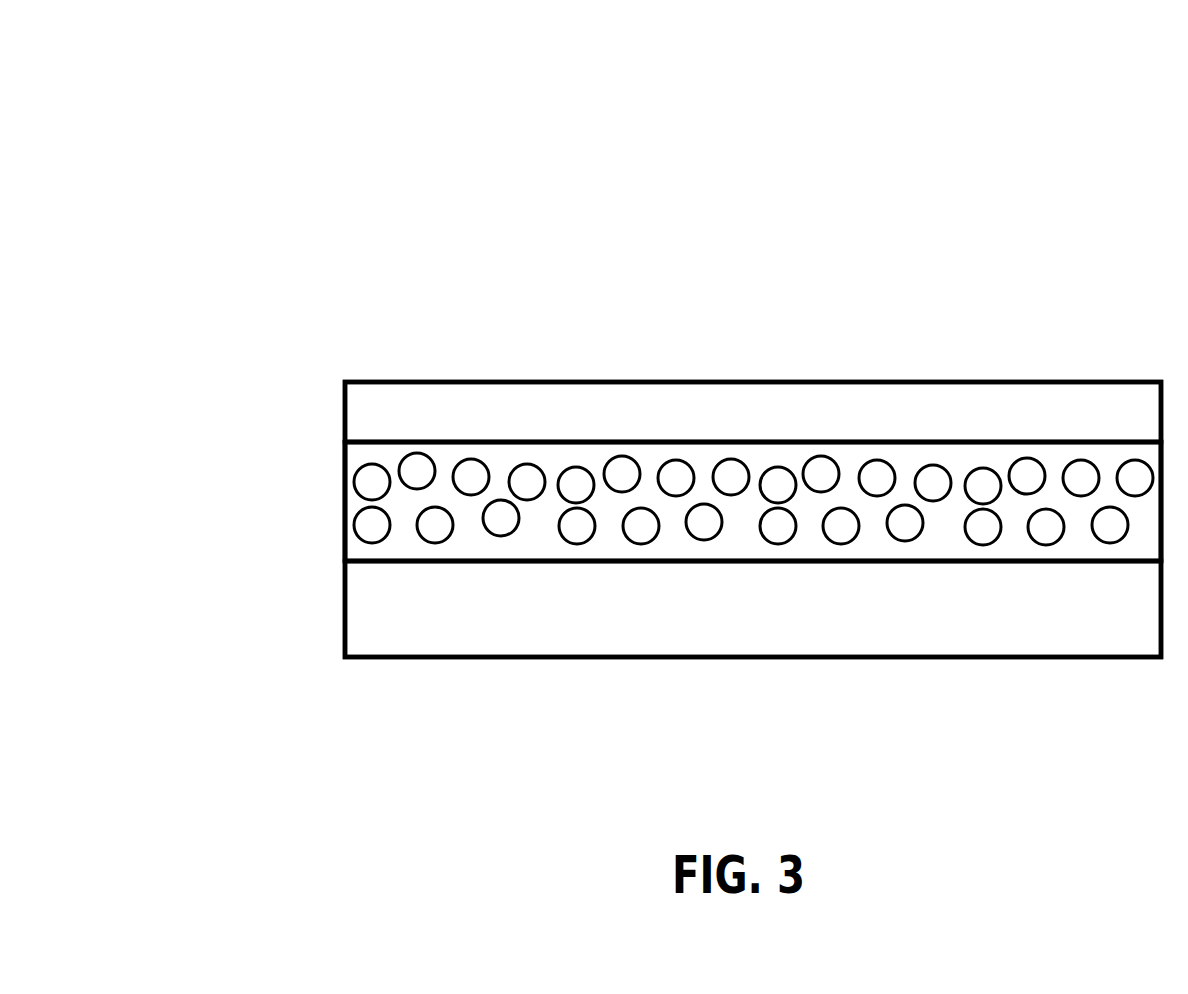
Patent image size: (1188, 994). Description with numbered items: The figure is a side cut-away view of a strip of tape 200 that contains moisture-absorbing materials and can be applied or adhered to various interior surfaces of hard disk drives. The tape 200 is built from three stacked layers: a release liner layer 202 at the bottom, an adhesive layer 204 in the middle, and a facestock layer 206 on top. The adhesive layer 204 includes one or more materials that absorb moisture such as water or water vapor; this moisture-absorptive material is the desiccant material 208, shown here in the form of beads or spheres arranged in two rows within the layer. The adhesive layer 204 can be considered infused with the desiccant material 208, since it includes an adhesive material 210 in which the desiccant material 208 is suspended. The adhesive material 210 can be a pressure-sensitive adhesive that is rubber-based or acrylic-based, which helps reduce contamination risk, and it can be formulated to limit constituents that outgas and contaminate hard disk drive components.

The tape 200 is at (236, 139).
The release liner layer 202 is at (352, 620).
The adhesive layer 204 is at (345, 540).
The facestock layer 206 is at (356, 417).
The desiccant material 208 is at (1081, 462).
The adhesive material 210 is at (957, 453).